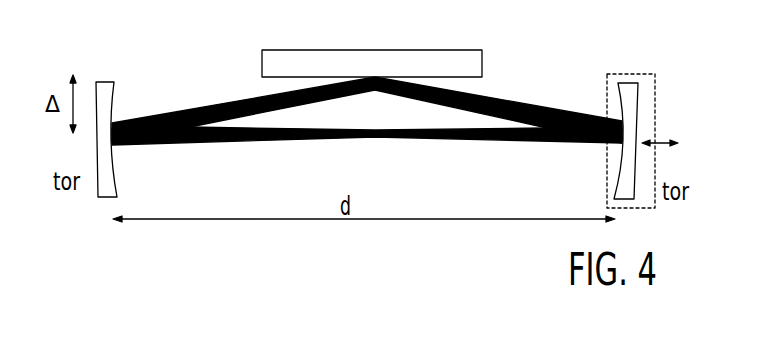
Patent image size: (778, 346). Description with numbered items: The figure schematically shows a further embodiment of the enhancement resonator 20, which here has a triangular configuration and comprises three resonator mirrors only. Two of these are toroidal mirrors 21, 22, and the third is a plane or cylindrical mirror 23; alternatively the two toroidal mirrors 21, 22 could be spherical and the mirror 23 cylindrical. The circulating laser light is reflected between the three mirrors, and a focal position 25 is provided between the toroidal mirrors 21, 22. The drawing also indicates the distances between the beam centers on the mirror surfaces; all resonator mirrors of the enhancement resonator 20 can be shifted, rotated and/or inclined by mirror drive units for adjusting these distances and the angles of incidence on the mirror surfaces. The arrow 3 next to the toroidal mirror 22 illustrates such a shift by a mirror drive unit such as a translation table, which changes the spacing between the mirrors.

The enhancement resonator 20 is at (386, 126).
The toroidal mirror 21 is at (110, 167).
The toroidal mirror 22 is at (625, 167).
The plane or cylindrical mirror 23 is at (458, 60).
The focal position 25 is at (382, 137).
The arrow 3 is at (660, 129).